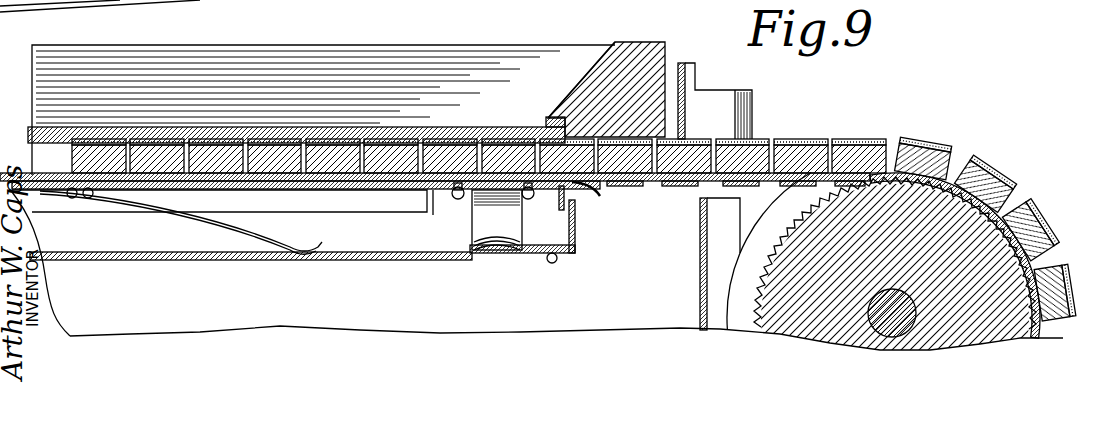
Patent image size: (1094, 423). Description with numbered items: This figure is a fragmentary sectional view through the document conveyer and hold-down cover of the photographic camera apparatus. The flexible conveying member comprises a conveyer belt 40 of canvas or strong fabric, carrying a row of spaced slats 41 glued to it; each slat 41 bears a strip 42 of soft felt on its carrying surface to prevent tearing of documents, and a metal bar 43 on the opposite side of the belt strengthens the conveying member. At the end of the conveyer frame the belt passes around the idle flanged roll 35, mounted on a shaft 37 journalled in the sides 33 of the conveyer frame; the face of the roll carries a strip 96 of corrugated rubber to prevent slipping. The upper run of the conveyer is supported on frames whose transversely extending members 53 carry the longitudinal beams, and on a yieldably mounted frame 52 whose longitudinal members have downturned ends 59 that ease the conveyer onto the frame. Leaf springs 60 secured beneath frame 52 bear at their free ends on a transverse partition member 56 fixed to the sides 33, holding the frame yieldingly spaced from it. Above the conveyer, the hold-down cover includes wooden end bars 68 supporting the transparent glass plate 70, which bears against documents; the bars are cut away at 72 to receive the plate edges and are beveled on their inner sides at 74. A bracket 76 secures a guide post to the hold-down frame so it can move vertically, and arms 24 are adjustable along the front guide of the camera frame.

The arms 24 is at (323, 87).
The sides of the conveyer frame 33 is at (440, 322).
The flanged roll 35 is at (990, 332).
The shaft 37 is at (882, 330).
The conveyer belt 40 is at (391, 181).
The slats 41 is at (445, 150).
The strips of soft fabric 42 is at (340, 144).
The bar 43 is at (328, 201).
The frame 52 is at (447, 198).
The transversely extending members 53 is at (700, 226).
The partition member 56 is at (339, 254).
The downturned ends 59 is at (604, 196).
The leaf springs 60 is at (208, 212).
The end bars 68 is at (645, 48).
The transparent plate 70 is at (407, 128).
The cut-away corners 72 is at (528, 127).
The bevel 74 is at (552, 116).
The bracket 76 is at (756, 110).
The strip of corrugated rubber 96 is at (760, 270).